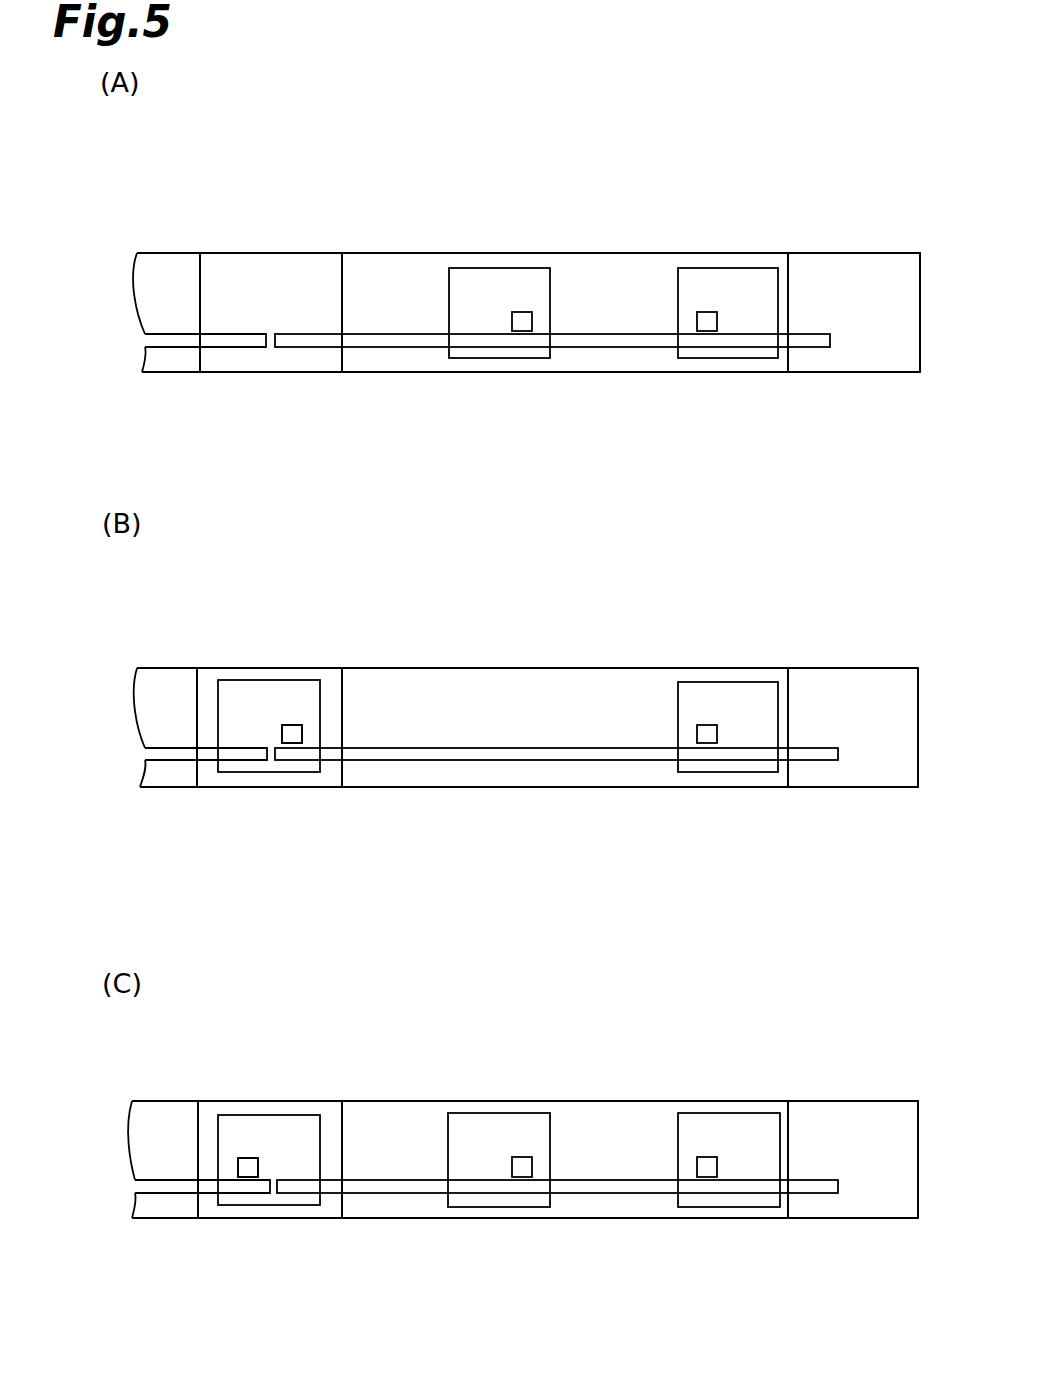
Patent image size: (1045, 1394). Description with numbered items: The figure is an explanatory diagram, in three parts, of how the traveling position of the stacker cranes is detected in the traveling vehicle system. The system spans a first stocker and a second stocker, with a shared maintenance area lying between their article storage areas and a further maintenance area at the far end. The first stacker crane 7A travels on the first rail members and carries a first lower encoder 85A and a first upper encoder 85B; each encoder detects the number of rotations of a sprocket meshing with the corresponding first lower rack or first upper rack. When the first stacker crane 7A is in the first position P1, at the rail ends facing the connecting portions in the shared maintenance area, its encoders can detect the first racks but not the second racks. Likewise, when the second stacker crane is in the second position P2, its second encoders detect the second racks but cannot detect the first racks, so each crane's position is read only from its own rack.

The first stacker crane 7A is at (300, 1115).
The first lower encoder 85A is at (296, 1217).
The first upper encoder 85B is at (246, 1177).
The first position P1 is at (267, 1148).
The second position P2 is at (312, 713).